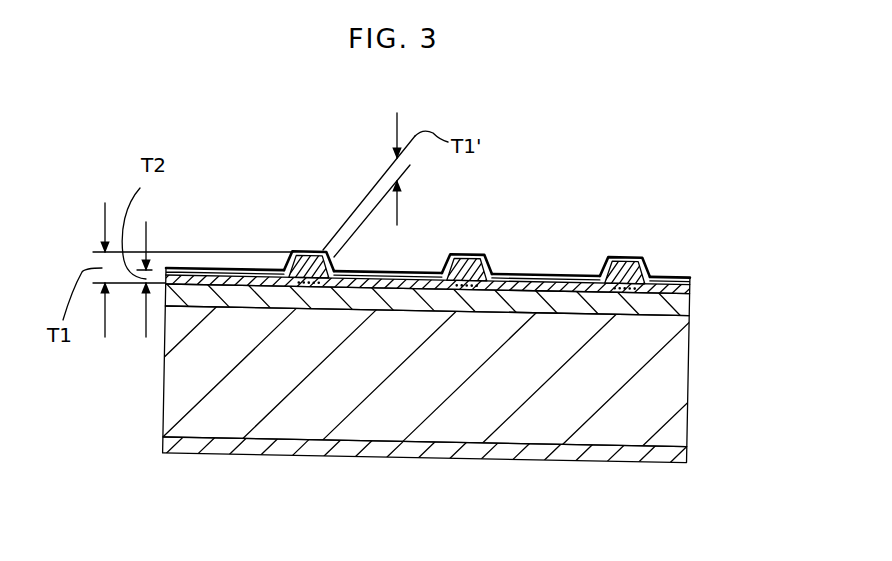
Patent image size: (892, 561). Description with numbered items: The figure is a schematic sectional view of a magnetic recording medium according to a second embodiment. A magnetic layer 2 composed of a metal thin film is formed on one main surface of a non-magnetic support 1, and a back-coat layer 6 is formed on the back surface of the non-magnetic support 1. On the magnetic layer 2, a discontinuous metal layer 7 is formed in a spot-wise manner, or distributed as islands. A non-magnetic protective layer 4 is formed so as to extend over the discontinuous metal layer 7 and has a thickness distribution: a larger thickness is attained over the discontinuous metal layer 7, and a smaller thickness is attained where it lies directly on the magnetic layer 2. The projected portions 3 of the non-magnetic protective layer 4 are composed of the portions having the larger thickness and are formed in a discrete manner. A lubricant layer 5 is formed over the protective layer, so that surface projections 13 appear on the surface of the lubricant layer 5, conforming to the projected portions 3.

The non-magnetic support 1 is at (400, 420).
The magnetic layer 2 is at (668, 306).
The projected portions 3 is at (293, 258).
The non-magnetic protective layer 4 is at (406, 274).
The lubricant layer 5 is at (562, 271).
The back-coat layer 6 is at (320, 448).
The discontinuous metal layer 7 is at (516, 278).
The surface projections 13 is at (312, 250).